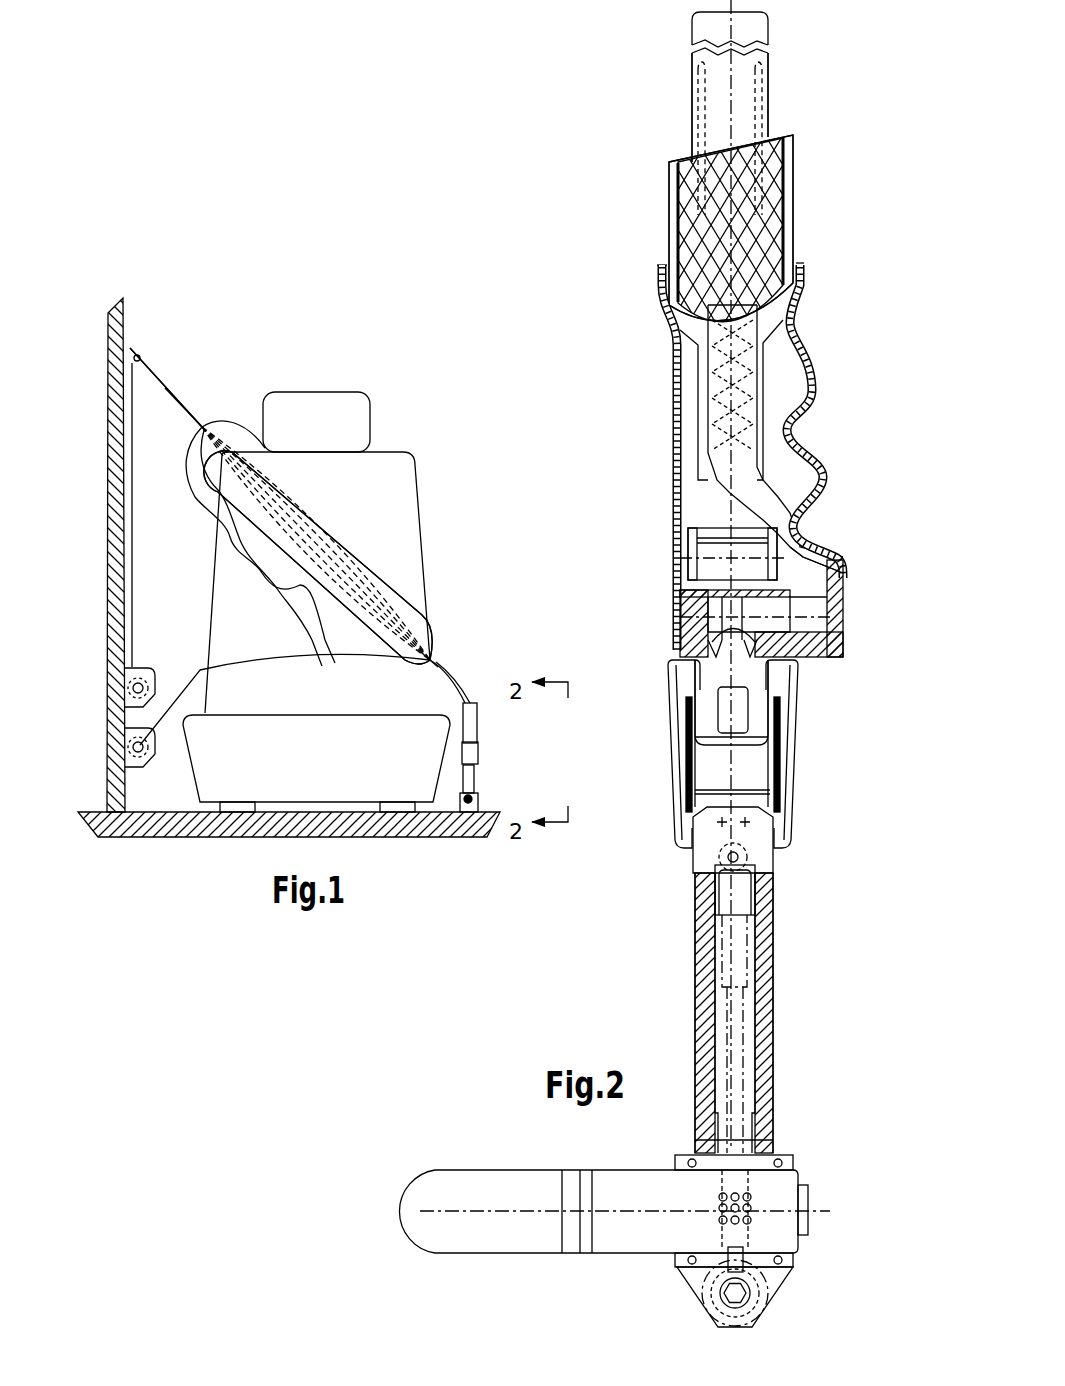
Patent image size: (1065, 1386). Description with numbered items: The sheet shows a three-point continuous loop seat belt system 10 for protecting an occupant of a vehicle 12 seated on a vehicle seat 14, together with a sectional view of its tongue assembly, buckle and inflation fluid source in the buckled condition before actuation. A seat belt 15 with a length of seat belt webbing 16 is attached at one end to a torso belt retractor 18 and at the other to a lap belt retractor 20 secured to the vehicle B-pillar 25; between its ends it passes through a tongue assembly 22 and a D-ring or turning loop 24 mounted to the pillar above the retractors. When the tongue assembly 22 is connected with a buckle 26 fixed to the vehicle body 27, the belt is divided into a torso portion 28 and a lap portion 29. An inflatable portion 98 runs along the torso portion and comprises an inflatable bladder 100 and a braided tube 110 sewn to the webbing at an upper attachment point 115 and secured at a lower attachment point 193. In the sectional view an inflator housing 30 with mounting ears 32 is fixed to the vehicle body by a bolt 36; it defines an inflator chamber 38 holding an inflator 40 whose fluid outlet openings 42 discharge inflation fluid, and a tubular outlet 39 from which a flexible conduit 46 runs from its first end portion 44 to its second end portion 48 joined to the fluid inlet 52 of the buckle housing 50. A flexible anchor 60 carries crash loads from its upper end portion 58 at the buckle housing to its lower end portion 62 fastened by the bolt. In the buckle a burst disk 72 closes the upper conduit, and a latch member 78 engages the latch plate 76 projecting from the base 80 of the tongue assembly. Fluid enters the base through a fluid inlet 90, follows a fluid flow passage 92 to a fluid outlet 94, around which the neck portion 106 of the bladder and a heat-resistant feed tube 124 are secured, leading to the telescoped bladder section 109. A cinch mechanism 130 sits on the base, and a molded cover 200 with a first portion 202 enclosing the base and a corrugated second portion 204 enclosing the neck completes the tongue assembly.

In FIG. 1, the seat belt system 10 is at (418, 405).
In FIG. 2, the seat belt system 10 is at (512, 1082).
In FIG. 1, the vehicle 12 is at (92, 600).
In FIG. 1, the vehicle seat 14 is at (212, 590).
In FIG. 1, the seat belt 15 is at (168, 368).
In FIG. 2, the seat belt 15 is at (791, 100).
In FIG. 1, the seat belt webbing 16 is at (190, 404).
In FIG. 2, the seat belt webbing 16 is at (797, 163).
In FIG. 1, the torso belt retractor 18 is at (132, 688).
In FIG. 1, the lap belt retractor 20 is at (122, 752).
In FIG. 1, the tongue assembly 22 is at (471, 727).
In FIG. 1, the D-ring or turning loop 24 is at (128, 336).
In FIG. 1, the vehicle B-pillar 25 is at (105, 440).
In FIG. 1, the buckle 26 is at (478, 763).
In FIG. 2, the buckle 26 is at (803, 783).
In FIG. 1, the vehicle body 27 is at (110, 822).
In FIG. 1, the torso portion 28 is at (446, 615).
In FIG. 2, the torso portion 28 is at (660, 49).
In FIG. 1, the lap portion 29 is at (322, 628).
In FIG. 1, the inflator housing 30 is at (460, 812).
In FIG. 2, the inflator housing 30 is at (794, 1155).
In FIG. 2, the mounting ears 32 is at (716, 1321).
In FIG. 2, the bolt 36 is at (742, 1300).
In FIG. 2, the inflator chamber 38 is at (763, 1248).
In FIG. 2, the tubular outlet 39 is at (748, 1128).
In FIG. 1, the inflator 40 is at (472, 800).
In FIG. 2, the inflator 40 is at (560, 1255).
In FIG. 2, the fluid outlet openings 42 is at (720, 1198).
In FIG. 2, the first end portion of flexible conduit 44 is at (700, 1131).
In FIG. 2, the flexible conduit 46 is at (694, 1042).
In FIG. 2, the second end portion of flexible conduit 48 is at (699, 892).
In FIG. 2, the buckle housing 50 is at (774, 861).
In FIG. 2, the fluid inlet 52 is at (744, 901).
In FIG. 2, the upper end portion of anchor 58 is at (745, 847).
In FIG. 2, the flexible anchor 60 is at (747, 1031).
In FIG. 2, the lower end portion of anchor 62 is at (778, 1272).
In FIG. 2, the burst disk 72 is at (697, 628).
In FIG. 2, the latch plate 76 is at (764, 717).
In FIG. 2, the latch member 78 is at (730, 733).
In FIG. 2, the base 80 is at (800, 660).
In FIG. 2, the fluid inlet 90 is at (727, 628).
In FIG. 2, the fluid flow passage 92 is at (793, 624).
In FIG. 2, the fluid outlet 94 is at (822, 568).
In FIG. 1, the inflatable portion 98 is at (323, 502).
In FIG. 1, the inflatable bladder 100 is at (333, 547).
In FIG. 2, the inflatable bladder 100 is at (772, 78).
In FIG. 2, the neck portion 106 is at (720, 490).
In FIG. 2, the telescoped bladder section 109 is at (714, 97).
In FIG. 1, the braided tube 110 is at (322, 526).
In FIG. 2, the braided tube 110 is at (768, 223).
In FIG. 1, the upper attachment point 115 is at (198, 430).
In FIG. 2, the feed tube 124 is at (748, 295).
In FIG. 2, the cinch mechanism 130 is at (688, 535).
In FIG. 1, the lower attachment point 193 is at (431, 660).
In FIG. 2, the cover 200 is at (660, 298).
In FIG. 2, the first portion of cover 202 is at (849, 597).
In FIG. 2, the second portion of cover 204 is at (807, 436).